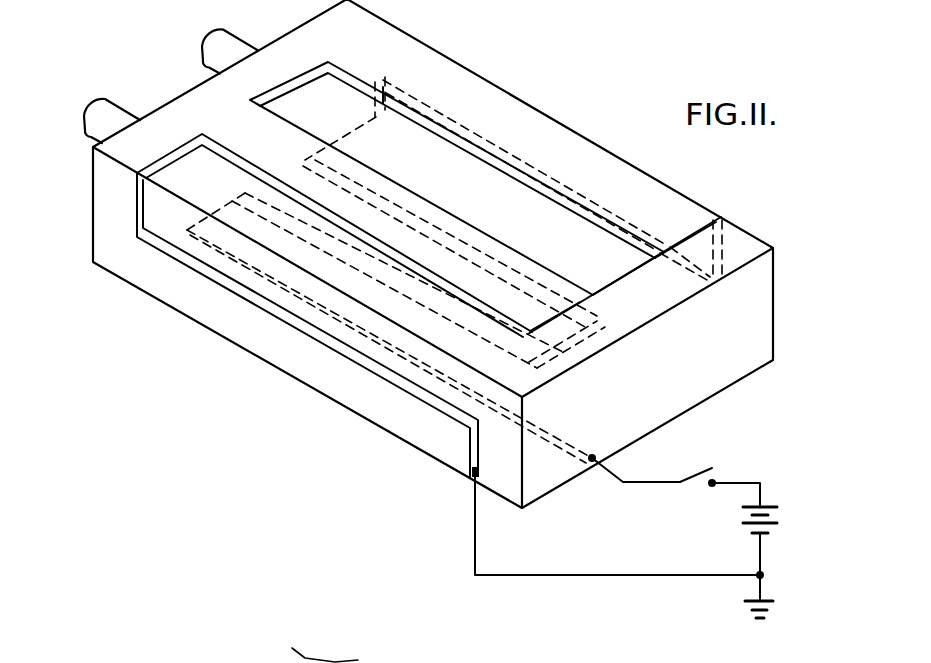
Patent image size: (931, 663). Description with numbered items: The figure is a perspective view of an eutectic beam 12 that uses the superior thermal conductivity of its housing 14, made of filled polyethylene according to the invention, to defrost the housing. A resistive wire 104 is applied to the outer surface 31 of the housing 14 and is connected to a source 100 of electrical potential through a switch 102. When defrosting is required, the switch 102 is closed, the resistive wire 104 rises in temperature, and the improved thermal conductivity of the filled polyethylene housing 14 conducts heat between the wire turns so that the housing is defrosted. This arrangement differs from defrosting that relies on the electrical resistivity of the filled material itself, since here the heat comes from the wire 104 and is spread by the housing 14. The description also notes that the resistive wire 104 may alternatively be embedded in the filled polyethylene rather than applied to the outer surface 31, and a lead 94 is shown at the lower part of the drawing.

The eutectic beam 12 is at (310, 436).
The housing 14 is at (775, 287).
The outer surface 31 is at (510, 108).
The resistive wire 104 is at (292, 318).
The switch 102 is at (713, 470).
The source of electrical potential 100 is at (778, 511).
The lead wire 94 is at (310, 650).